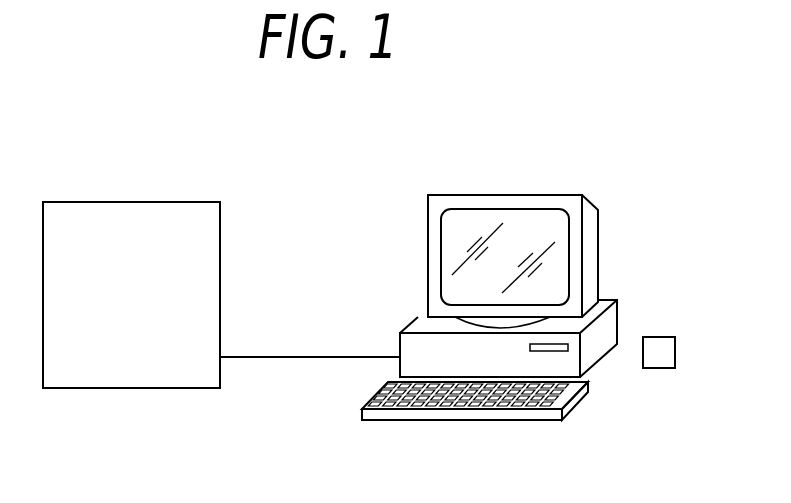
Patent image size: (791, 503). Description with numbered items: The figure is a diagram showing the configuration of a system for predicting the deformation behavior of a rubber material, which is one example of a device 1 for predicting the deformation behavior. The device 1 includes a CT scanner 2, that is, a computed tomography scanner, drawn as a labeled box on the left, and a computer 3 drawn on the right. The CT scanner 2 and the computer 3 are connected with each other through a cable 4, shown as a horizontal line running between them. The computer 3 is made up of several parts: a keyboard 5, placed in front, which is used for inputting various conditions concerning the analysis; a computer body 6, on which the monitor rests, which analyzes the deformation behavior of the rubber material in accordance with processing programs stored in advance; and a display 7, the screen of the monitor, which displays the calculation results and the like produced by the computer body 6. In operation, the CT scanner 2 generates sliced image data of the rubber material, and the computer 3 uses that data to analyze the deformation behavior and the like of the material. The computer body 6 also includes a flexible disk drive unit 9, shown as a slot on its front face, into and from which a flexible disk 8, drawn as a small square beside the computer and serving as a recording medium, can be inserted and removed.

The device for predicting a deformation behavior 1 is at (330, 179).
The CT scanner 2 is at (129, 201).
The computer 3 is at (505, 191).
The cable 4 is at (288, 356).
The keyboard 5 is at (467, 413).
The computer body 6 is at (407, 325).
The display 7 is at (555, 263).
The flexible disk 8 is at (660, 337).
The flexible disk drive unit 9 is at (568, 348).